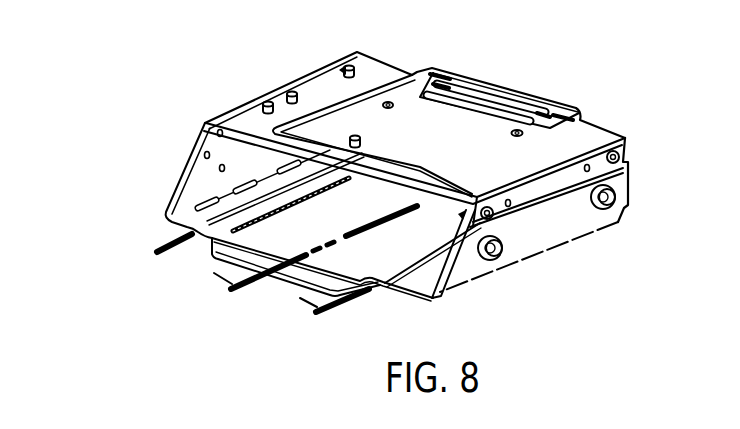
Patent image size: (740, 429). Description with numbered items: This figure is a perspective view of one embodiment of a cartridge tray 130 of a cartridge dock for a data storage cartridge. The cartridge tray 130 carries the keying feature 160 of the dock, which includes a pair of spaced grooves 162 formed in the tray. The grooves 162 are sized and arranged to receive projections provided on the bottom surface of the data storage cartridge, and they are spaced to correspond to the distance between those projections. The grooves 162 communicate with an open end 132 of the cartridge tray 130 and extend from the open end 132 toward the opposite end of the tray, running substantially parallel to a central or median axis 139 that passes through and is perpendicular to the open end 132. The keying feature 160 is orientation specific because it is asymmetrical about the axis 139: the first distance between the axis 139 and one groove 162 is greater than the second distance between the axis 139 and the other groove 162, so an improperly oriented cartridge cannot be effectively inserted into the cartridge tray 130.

The cartridge tray 130 is at (264, 64).
The open end 132 is at (247, 158).
The central or median axis 139 is at (353, 232).
The keying feature 160 is at (144, 234).
The grooves 162 is at (203, 218).